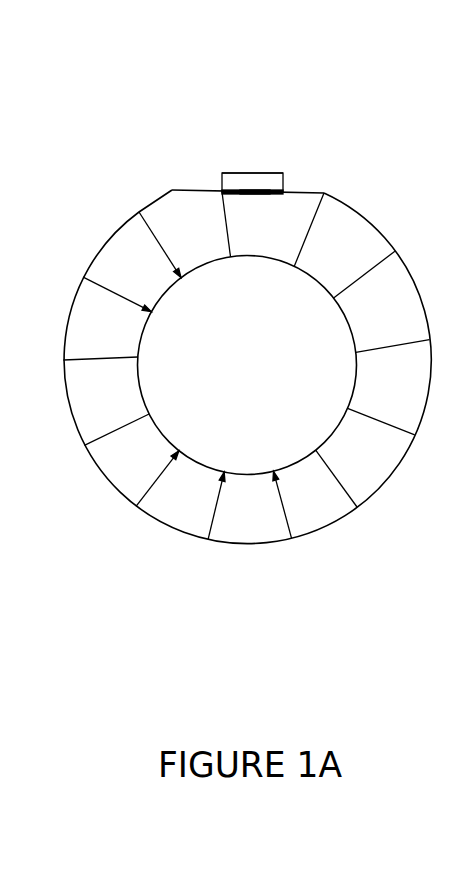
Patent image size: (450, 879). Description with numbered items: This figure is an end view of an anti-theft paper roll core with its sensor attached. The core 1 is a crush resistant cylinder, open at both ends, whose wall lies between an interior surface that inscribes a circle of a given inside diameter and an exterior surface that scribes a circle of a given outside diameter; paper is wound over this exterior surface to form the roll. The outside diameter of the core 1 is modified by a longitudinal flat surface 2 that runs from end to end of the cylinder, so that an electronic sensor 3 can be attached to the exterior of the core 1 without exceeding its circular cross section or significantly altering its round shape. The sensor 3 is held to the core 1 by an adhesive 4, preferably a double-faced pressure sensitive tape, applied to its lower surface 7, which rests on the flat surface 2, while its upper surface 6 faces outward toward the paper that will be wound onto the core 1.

The core 1 is at (247, 350).
The flat surface 2 is at (217, 127).
The sensor 3 is at (328, 127).
The adhesive 4 is at (317, 170).
The upper surface 6 is at (274, 118).
The lower surface 7 is at (279, 265).